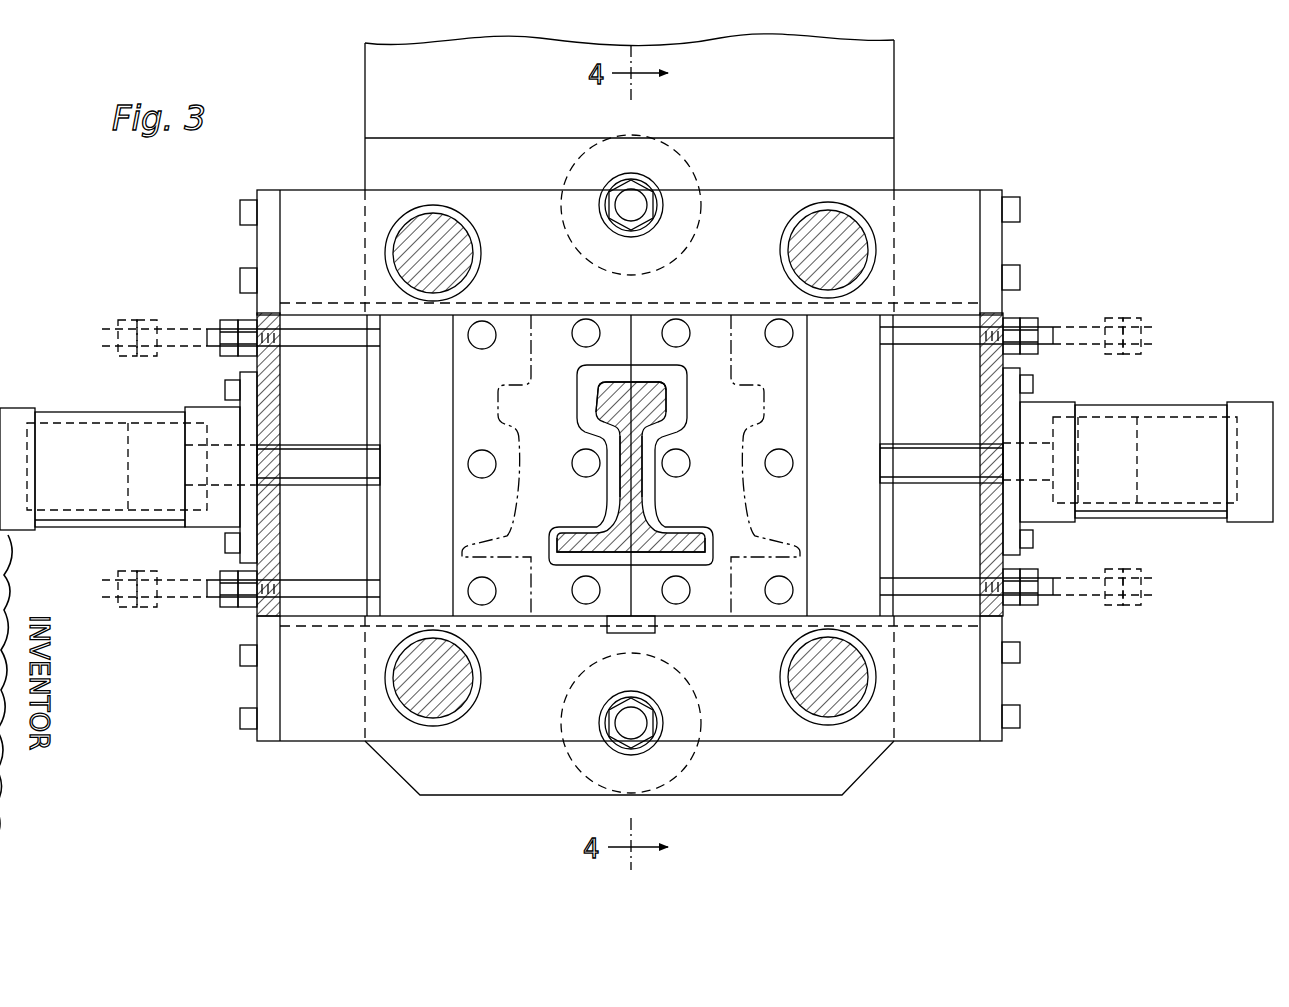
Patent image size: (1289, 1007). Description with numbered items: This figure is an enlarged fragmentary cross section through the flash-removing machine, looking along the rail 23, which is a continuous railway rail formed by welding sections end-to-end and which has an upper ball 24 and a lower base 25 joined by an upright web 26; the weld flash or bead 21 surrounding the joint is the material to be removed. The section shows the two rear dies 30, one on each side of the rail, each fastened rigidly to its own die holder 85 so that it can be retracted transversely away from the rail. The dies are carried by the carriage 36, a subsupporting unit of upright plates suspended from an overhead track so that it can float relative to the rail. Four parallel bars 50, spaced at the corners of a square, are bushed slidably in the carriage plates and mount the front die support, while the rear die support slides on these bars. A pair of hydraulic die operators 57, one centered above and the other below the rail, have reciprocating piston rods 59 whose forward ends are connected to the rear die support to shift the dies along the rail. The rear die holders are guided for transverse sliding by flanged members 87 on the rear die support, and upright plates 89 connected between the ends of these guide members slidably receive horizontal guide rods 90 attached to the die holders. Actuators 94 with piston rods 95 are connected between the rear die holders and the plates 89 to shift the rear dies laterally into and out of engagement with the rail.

The flash or bead 21 is at (637, 473).
The rail 23 is at (668, 381).
The upper ball 24 is at (658, 399).
The lower base 25 is at (648, 548).
The upright web 26 is at (640, 449).
The rear die 30 is at (457, 437).
The carriage 36 is at (363, 128).
The parallel bars 50 is at (455, 240).
The hydraulic die operators 57 is at (572, 168).
The piston rods 59 is at (638, 212).
The die holder 85 is at (396, 386).
The flanged members 87 is at (337, 202).
The upright plates 89 is at (268, 249).
The horizontal guide rods 90 is at (342, 340).
The actuators 94 is at (156, 412).
The piston rods 95 is at (327, 447).